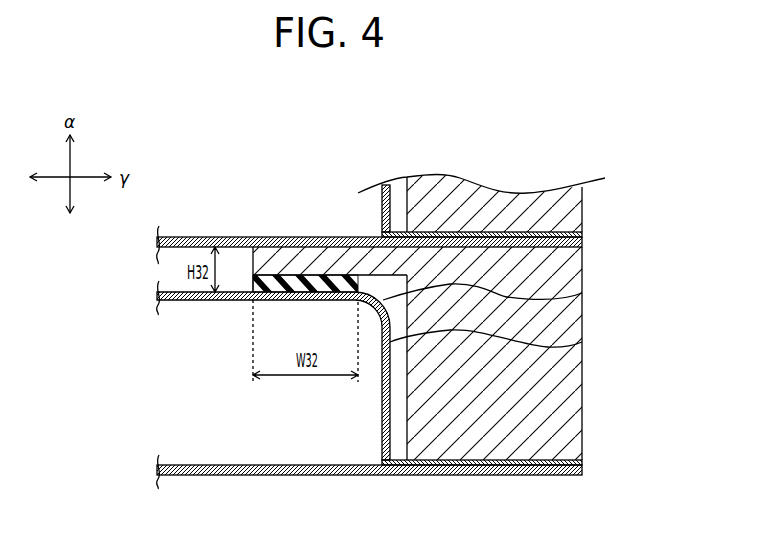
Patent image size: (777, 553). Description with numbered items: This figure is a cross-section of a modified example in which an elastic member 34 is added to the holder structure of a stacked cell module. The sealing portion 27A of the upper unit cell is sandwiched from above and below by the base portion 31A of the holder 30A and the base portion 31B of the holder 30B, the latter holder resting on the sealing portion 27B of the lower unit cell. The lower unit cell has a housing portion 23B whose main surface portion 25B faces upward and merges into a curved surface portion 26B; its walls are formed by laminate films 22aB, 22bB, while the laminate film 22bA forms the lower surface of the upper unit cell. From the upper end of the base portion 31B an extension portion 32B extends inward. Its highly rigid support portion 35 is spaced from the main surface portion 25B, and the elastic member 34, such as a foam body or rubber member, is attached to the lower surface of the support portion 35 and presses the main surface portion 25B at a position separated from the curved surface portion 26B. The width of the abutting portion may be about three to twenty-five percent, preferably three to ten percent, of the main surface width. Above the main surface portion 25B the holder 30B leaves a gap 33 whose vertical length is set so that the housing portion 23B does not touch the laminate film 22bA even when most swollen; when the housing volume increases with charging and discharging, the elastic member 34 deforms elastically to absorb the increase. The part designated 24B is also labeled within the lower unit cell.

The laminate film 22aB is at (186, 300).
The laminate film 22bA is at (232, 238).
The laminate film 22bB is at (186, 476).
The housing portion 23B is at (390, 395).
The filler body 24B is at (583, 343).
The main surface portion 25B is at (178, 292).
The curved surface portion 26B is at (583, 297).
The sealing portion 27A is at (497, 232).
The sealing portion 27B is at (472, 476).
The holder 30A is at (584, 200).
The base portion 31A is at (548, 214).
The holder 30B is at (463, 352).
The base portion 31B is at (585, 258).
The extension portion 32B is at (307, 217).
The gap 33 is at (170, 262).
The elastic member 34 is at (283, 274).
The support portion 35 is at (325, 268).